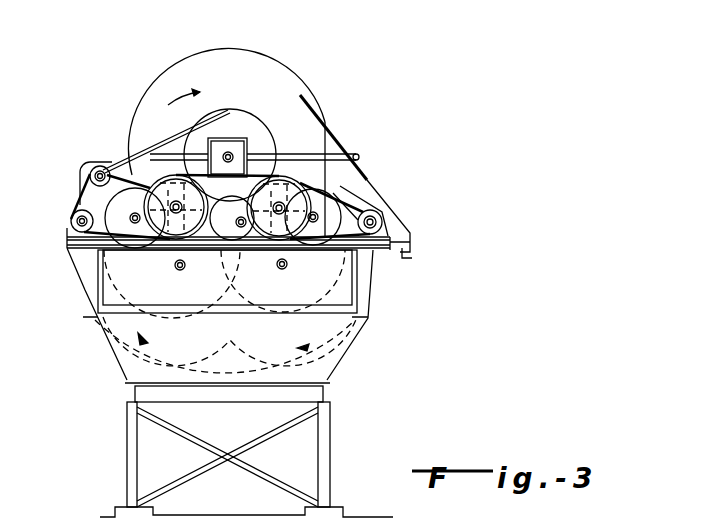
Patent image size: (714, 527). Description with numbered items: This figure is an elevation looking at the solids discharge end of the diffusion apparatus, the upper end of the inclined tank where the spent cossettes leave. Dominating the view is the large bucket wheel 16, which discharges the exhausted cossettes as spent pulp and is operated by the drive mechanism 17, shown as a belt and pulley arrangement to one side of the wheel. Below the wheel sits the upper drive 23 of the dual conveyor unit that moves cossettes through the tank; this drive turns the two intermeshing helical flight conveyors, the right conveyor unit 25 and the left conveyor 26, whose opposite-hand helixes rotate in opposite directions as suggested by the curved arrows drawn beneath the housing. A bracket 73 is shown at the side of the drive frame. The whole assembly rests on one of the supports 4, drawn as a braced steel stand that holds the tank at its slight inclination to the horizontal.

The bucket wheel 16 is at (295, 98).
The drive mechanism 17 is at (100, 167).
The upper drive 23 is at (362, 190).
The bracket 73 is at (414, 252).
The left conveyor 26 is at (101, 335).
The right conveyor unit 25 is at (352, 330).
The support 4 is at (331, 455).